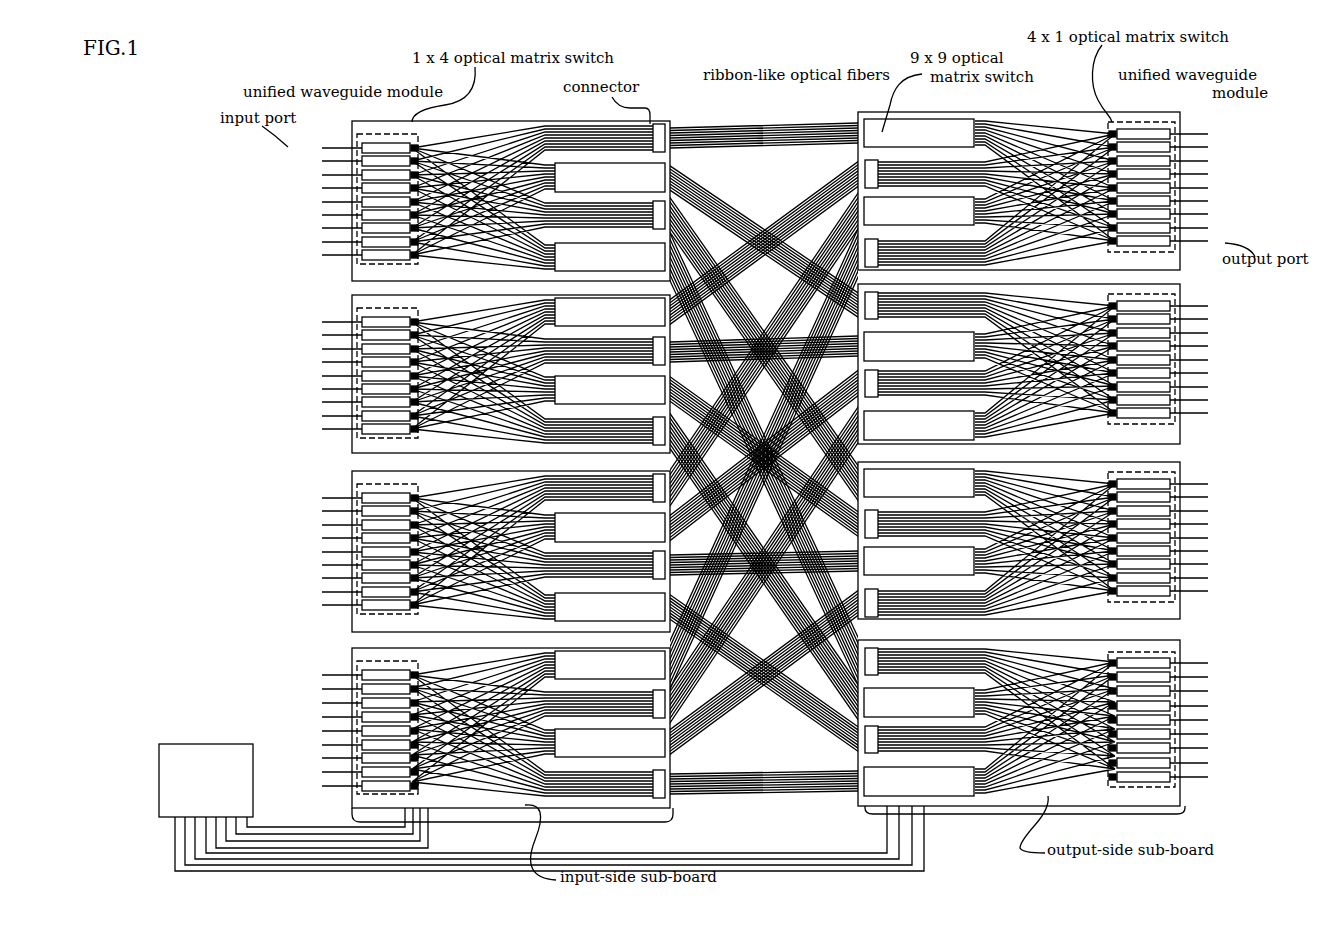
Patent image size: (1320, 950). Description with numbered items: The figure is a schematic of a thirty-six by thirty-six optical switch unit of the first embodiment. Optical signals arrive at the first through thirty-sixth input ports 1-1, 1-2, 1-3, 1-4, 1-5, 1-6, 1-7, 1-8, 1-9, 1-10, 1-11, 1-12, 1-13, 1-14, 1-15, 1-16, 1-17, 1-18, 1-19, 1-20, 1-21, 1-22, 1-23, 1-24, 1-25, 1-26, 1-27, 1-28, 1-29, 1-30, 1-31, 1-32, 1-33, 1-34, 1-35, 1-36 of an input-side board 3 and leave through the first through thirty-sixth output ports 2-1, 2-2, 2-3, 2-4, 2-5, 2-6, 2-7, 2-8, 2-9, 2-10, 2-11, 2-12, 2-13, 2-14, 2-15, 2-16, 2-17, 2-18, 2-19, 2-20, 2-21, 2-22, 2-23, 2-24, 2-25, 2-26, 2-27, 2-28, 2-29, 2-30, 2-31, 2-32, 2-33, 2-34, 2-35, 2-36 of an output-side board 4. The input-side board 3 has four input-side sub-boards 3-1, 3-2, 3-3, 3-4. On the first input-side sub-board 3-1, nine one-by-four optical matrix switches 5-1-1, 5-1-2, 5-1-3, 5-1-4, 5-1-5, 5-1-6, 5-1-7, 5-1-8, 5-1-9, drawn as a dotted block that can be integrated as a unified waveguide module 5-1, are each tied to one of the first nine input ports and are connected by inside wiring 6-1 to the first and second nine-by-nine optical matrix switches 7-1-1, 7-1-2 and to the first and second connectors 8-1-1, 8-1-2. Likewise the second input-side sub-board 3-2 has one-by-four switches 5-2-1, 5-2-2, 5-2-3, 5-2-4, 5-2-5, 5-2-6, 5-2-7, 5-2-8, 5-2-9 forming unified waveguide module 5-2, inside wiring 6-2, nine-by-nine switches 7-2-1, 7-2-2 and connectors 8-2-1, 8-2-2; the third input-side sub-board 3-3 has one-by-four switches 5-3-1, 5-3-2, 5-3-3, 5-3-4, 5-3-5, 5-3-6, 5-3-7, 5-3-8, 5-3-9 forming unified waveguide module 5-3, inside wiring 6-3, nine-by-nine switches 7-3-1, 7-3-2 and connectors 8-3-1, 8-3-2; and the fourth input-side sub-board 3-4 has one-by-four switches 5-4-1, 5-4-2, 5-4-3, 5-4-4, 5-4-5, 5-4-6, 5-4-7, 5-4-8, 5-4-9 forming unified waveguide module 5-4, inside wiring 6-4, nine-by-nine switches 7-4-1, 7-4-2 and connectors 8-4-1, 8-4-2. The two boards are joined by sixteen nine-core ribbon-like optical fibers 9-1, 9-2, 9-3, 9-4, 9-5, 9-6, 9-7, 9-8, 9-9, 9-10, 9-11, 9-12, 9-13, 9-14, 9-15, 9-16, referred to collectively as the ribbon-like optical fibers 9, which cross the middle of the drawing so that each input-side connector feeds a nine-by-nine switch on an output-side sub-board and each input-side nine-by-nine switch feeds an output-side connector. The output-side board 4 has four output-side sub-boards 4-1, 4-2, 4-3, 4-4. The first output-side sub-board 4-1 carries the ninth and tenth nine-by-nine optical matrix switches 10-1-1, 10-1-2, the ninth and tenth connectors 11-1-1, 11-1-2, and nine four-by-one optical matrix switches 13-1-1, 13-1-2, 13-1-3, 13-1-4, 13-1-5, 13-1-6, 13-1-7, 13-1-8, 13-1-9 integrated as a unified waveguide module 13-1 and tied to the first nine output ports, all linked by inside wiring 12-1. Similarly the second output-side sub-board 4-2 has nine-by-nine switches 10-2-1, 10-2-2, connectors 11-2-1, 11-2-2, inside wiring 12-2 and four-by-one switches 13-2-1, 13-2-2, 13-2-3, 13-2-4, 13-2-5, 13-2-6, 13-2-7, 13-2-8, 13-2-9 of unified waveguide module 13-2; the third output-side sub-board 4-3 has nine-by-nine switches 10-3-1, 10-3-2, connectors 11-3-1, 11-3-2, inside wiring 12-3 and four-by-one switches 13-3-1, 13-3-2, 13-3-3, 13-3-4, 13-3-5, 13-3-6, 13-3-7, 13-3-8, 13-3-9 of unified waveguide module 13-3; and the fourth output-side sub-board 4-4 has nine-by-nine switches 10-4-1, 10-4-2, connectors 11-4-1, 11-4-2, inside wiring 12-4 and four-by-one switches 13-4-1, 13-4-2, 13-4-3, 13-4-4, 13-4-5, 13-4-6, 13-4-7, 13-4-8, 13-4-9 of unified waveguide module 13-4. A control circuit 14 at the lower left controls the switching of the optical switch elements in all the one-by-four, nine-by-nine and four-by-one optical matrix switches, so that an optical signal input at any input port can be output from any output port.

The input port 1-1 is at (329, 148).
The input port 1-2 is at (329, 161).
The input port 1-3 is at (329, 175).
The input port 1-4 is at (329, 188).
The input port 1-5 is at (329, 202).
The input port 1-6 is at (329, 215).
The input port 1-7 is at (329, 228).
The input port 1-8 is at (329, 242).
The input port 1-9 is at (329, 255).
The input port 1-10 is at (325, 322).
The input port 1-11 is at (325, 335).
The input port 1-12 is at (325, 349).
The input port 1-13 is at (325, 362).
The input port 1-14 is at (325, 376).
The input port 1-15 is at (325, 389).
The input port 1-16 is at (325, 402).
The input port 1-17 is at (325, 416).
The input port 1-18 is at (325, 429).
The input port 1-19 is at (325, 498).
The input port 1-20 is at (325, 511).
The input port 1-21 is at (325, 525).
The input port 1-22 is at (325, 538).
The input port 1-23 is at (325, 552).
The input port 1-24 is at (325, 565).
The input port 1-25 is at (325, 578).
The input port 1-26 is at (325, 592).
The input port 1-27 is at (325, 605).
The input port 1-28 is at (325, 675).
The input port 1-29 is at (325, 689).
The input port 1-30 is at (325, 703).
The input port 1-31 is at (325, 717).
The input port 1-32 is at (325, 731).
The input port 1-33 is at (325, 745).
The input port 1-34 is at (325, 758).
The input port 1-35 is at (325, 772).
The input port 1-36 is at (325, 786).
The output port 2-1 is at (1202, 134).
The output port 2-2 is at (1202, 147).
The output port 2-3 is at (1202, 161).
The output port 2-4 is at (1202, 174).
The output port 2-5 is at (1202, 188).
The output port 2-6 is at (1202, 201).
The output port 2-7 is at (1202, 214).
The output port 2-8 is at (1202, 228).
The output port 2-9 is at (1202, 241).
The output port 2-10 is at (1207, 306).
The output port 2-11 is at (1207, 319).
The output port 2-12 is at (1207, 333).
The output port 2-13 is at (1207, 346).
The output port 2-14 is at (1207, 360).
The output port 2-15 is at (1207, 373).
The output port 2-16 is at (1207, 387).
The output port 2-17 is at (1207, 400).
The output port 2-18 is at (1207, 413).
The output port 2-19 is at (1207, 484).
The output port 2-20 is at (1207, 497).
The output port 2-21 is at (1207, 511).
The output port 2-22 is at (1207, 524).
The output port 2-23 is at (1207, 538).
The output port 2-24 is at (1207, 551).
The output port 2-25 is at (1207, 564).
The output port 2-26 is at (1207, 578).
The output port 2-27 is at (1207, 591).
The output port 2-28 is at (1207, 663).
The output port 2-29 is at (1207, 677).
The output port 2-30 is at (1207, 691).
The output port 2-31 is at (1207, 706).
The output port 2-32 is at (1207, 720).
The output port 2-33 is at (1207, 734).
The output port 2-34 is at (1207, 748).
The output port 2-35 is at (1207, 763).
The output port 2-36 is at (1207, 777).
The input-side board 3 is at (520, 822).
The input-side sub-board 3-1 is at (483, 191).
The input-side sub-board 3-2 is at (479, 364).
The input-side sub-board 3-3 is at (479, 541).
The input-side sub-board 3-4 is at (479, 718).
The output-side board 4 is at (996, 814).
The output-side sub-board 4-1 is at (1046, 180).
The output-side sub-board 4-2 is at (1051, 356).
The output-side sub-board 4-3 is at (1051, 532).
The output-side sub-board 4-4 is at (1051, 714).
The unified waveguide module 5-1 is at (365, 134).
The unified waveguide module 5-2 is at (368, 308).
The unified waveguide module 5-3 is at (368, 484).
The unified waveguide module 5-4 is at (368, 661).
The 1×4 optical matrix switch 5-1-1 is at (390, 148).
The 1×4 optical matrix switch 5-1-2 is at (390, 161).
The 1×4 optical matrix switch 5-1-3 is at (390, 175).
The 1×4 optical matrix switch 5-1-4 is at (390, 188).
The 1×4 optical matrix switch 5-1-5 is at (390, 202).
The 1×4 optical matrix switch 5-1-6 is at (390, 215).
The 1×4 optical matrix switch 5-1-7 is at (390, 228).
The 1×4 optical matrix switch 5-1-8 is at (390, 242).
The 1×4 optical matrix switch 5-1-9 is at (390, 255).
The 1×4 optical matrix switch 5-2-1 is at (390, 322).
The 1×4 optical matrix switch 5-2-2 is at (390, 335).
The 1×4 optical matrix switch 5-2-3 is at (390, 349).
The 1×4 optical matrix switch 5-2-4 is at (390, 362).
The 1×4 optical matrix switch 5-2-5 is at (390, 376).
The 1×4 optical matrix switch 5-2-6 is at (390, 389).
The 1×4 optical matrix switch 5-2-7 is at (390, 402).
The 1×4 optical matrix switch 5-2-8 is at (390, 416).
The 1×4 optical matrix switch 5-2-9 is at (390, 429).
The 1×4 optical matrix switch 5-3-1 is at (390, 498).
The 1×4 optical matrix switch 5-3-2 is at (390, 511).
The 1×4 optical matrix switch 5-3-3 is at (390, 525).
The 1×4 optical matrix switch 5-3-4 is at (390, 538).
The 1×4 optical matrix switch 5-3-5 is at (390, 552).
The 1×4 optical matrix switch 5-3-6 is at (390, 565).
The 1×4 optical matrix switch 5-3-7 is at (390, 578).
The 1×4 optical matrix switch 5-3-8 is at (390, 592).
The 1×4 optical matrix switch 5-3-9 is at (390, 605).
The 1×4 optical matrix switch 5-4-1 is at (390, 675).
The 1×4 optical matrix switch 5-4-2 is at (390, 689).
The 1×4 optical matrix switch 5-4-3 is at (390, 703).
The 1×4 optical matrix switch 5-4-4 is at (390, 717).
The 1×4 optical matrix switch 5-4-5 is at (390, 731).
The 1×4 optical matrix switch 5-4-6 is at (390, 745).
The 1×4 optical matrix switch 5-4-7 is at (390, 758).
The 1×4 optical matrix switch 5-4-8 is at (390, 772).
The 1×4 optical matrix switch 5-4-9 is at (390, 786).
The inside wiring 6-1 is at (440, 140).
The inside wiring 6-2 is at (455, 315).
The inside wiring 6-3 is at (455, 491).
The inside wiring 6-4 is at (455, 668).
The 9×9 optical matrix switch 7-1-1 is at (610, 177).
The 9×9 optical matrix switch 7-1-2 is at (610, 257).
The 9×9 optical matrix switch 7-2-1 is at (610, 312).
The 9×9 optical matrix switch 7-2-2 is at (610, 390).
The 9×9 optical matrix switch 7-3-1 is at (610, 527).
The 9×9 optical matrix switch 7-3-2 is at (610, 607).
The 9×9 optical matrix switch 7-4-1 is at (610, 665).
The 9×9 optical matrix switch 7-4-2 is at (610, 743).
The connector 8-1-1 is at (655, 152).
The connector 8-1-2 is at (655, 229).
The connector 8-2-1 is at (655, 339).
The connector 8-2-2 is at (655, 419).
The connector 8-3-1 is at (655, 502).
The connector 8-3-2 is at (655, 579).
The connector 8-4-1 is at (655, 692).
The connector 8-4-2 is at (655, 772).
The ribbon-like optical fibers 9 is at (852, 109).
The nine-core ribbon-like optical fiber 9-1 is at (703, 148).
The nine-core ribbon-like optical fiber 9-2 is at (818, 192).
The nine-core ribbon-like optical fiber 9-3 is at (815, 252).
The nine-core ribbon-like optical fiber 9-4 is at (858, 278).
The nine-core ribbon-like optical fiber 9-5 is at (738, 210).
The nine-core ribbon-like optical fiber 9-6 is at (760, 338).
The nine-core ribbon-like optical fiber 9-7 is at (830, 396).
The nine-core ribbon-like optical fiber 9-8 is at (858, 452).
The nine-core ribbon-like optical fiber 9-9 is at (700, 398).
The nine-core ribbon-like optical fiber 9-10 is at (828, 552).
The nine-core ribbon-like optical fiber 9-11 is at (764, 563).
The nine-core ribbon-like optical fiber 9-12 is at (745, 700).
The nine-core ribbon-like optical fiber 9-13 is at (858, 633).
The nine-core ribbon-like optical fiber 9-14 is at (760, 655).
The nine-core ribbon-like optical fiber 9-15 is at (800, 772).
The nine-core ribbon-like optical fiber 9-16 is at (728, 773).
The 9×9 optical matrix switch 10-1-1 is at (919, 133).
The 9×9 optical matrix switch 10-1-2 is at (919, 211).
The 9×9 optical matrix switch 10-2-1 is at (919, 346).
The 9×9 optical matrix switch 10-2-2 is at (919, 425).
The 9×9 optical matrix switch 10-3-1 is at (919, 483).
The 9×9 optical matrix switch 10-3-2 is at (919, 561).
The 9×9 optical matrix switch 10-4-1 is at (919, 702).
The 9×9 optical matrix switch 10-4-2 is at (919, 781).
The connector 11-1-1 is at (874, 159).
The connector 11-1-2 is at (874, 238).
The connector 11-2-1 is at (874, 334).
The connector 11-2-2 is at (874, 411).
The connector 11-3-1 is at (874, 509).
The connector 11-3-2 is at (874, 588).
The connector 11-4-1 is at (874, 690).
The connector 11-4-2 is at (874, 767).
The inside wiring 12-1 is at (1045, 118).
The inside wiring 12-2 is at (1057, 291).
The inside wiring 12-3 is at (1057, 469).
The inside wiring 12-4 is at (1057, 647).
The unified waveguide module 13-1 is at (1138, 122).
The unified waveguide module 13-2 is at (1150, 296).
The unified waveguide module 13-3 is at (1150, 474).
The unified waveguide module 13-4 is at (1150, 652).
The 4×1 optical matrix switch 13-1-1 is at (1139, 134).
The 4×1 optical matrix switch 13-1-2 is at (1139, 147).
The 4×1 optical matrix switch 13-1-3 is at (1139, 161).
The 4×1 optical matrix switch 13-1-4 is at (1139, 174).
The 4×1 optical matrix switch 13-1-5 is at (1139, 188).
The 4×1 optical matrix switch 13-1-6 is at (1139, 201).
The 4×1 optical matrix switch 13-1-7 is at (1139, 214).
The 4×1 optical matrix switch 13-1-8 is at (1139, 228).
The 4×1 optical matrix switch 13-1-9 is at (1139, 241).
The 4×1 optical matrix switch 13-2-1 is at (1139, 306).
The 4×1 optical matrix switch 13-2-2 is at (1139, 319).
The 4×1 optical matrix switch 13-2-3 is at (1139, 333).
The 4×1 optical matrix switch 13-2-4 is at (1139, 346).
The 4×1 optical matrix switch 13-2-5 is at (1139, 360).
The 4×1 optical matrix switch 13-2-6 is at (1139, 373).
The 4×1 optical matrix switch 13-2-7 is at (1139, 387).
The 4×1 optical matrix switch 13-2-8 is at (1139, 400).
The 4×1 optical matrix switch 13-2-9 is at (1139, 413).
The 4×1 optical matrix switch 13-3-1 is at (1139, 484).
The 4×1 optical matrix switch 13-3-2 is at (1139, 497).
The 4×1 optical matrix switch 13-3-3 is at (1139, 511).
The 4×1 optical matrix switch 13-3-4 is at (1139, 524).
The 4×1 optical matrix switch 13-3-5 is at (1139, 538).
The 4×1 optical matrix switch 13-3-6 is at (1139, 551).
The 4×1 optical matrix switch 13-3-7 is at (1139, 564).
The 4×1 optical matrix switch 13-3-8 is at (1139, 578).
The 4×1 optical matrix switch 13-3-9 is at (1139, 591).
The 4×1 optical matrix switch 13-4-1 is at (1139, 663).
The 4×1 optical matrix switch 13-4-2 is at (1139, 677).
The 4×1 optical matrix switch 13-4-3 is at (1139, 691).
The 4×1 optical matrix switch 13-4-4 is at (1139, 706).
The 4×1 optical matrix switch 13-4-5 is at (1139, 720).
The 4×1 optical matrix switch 13-4-6 is at (1139, 734).
The 4×1 optical matrix switch 13-4-7 is at (1139, 748).
The 4×1 optical matrix switch 13-4-8 is at (1139, 763).
The 4×1 optical matrix switch 13-4-9 is at (1139, 777).
The control circuit 14 is at (541, 807).